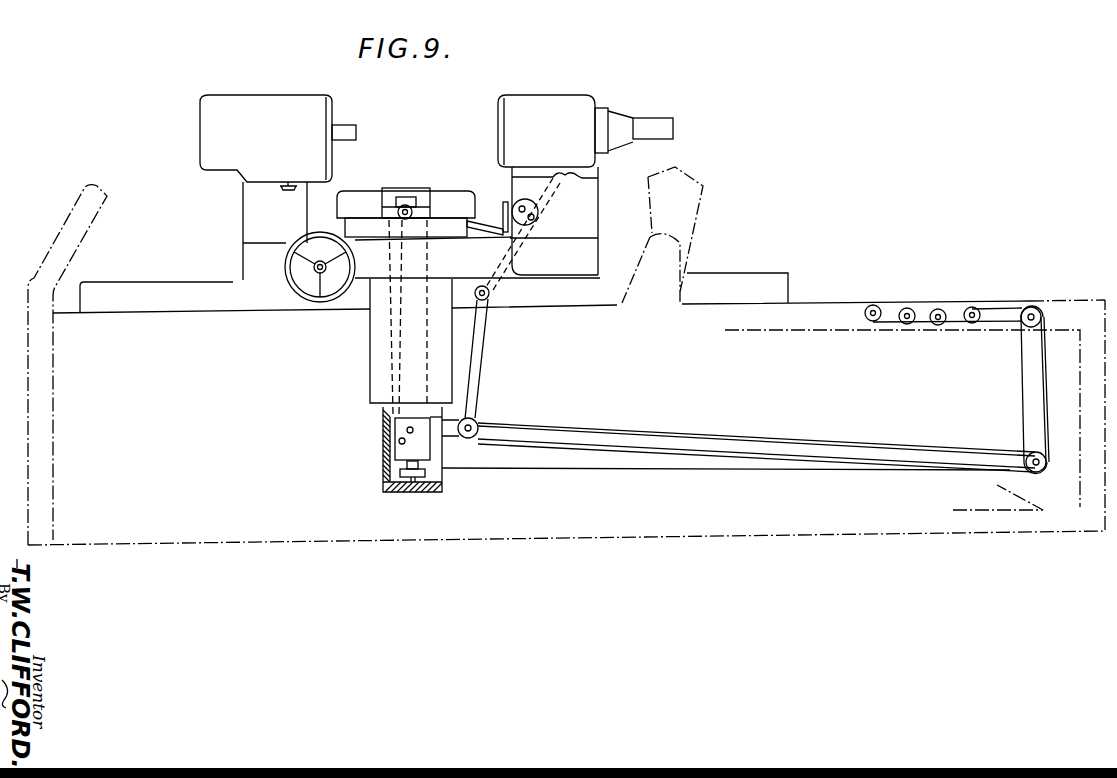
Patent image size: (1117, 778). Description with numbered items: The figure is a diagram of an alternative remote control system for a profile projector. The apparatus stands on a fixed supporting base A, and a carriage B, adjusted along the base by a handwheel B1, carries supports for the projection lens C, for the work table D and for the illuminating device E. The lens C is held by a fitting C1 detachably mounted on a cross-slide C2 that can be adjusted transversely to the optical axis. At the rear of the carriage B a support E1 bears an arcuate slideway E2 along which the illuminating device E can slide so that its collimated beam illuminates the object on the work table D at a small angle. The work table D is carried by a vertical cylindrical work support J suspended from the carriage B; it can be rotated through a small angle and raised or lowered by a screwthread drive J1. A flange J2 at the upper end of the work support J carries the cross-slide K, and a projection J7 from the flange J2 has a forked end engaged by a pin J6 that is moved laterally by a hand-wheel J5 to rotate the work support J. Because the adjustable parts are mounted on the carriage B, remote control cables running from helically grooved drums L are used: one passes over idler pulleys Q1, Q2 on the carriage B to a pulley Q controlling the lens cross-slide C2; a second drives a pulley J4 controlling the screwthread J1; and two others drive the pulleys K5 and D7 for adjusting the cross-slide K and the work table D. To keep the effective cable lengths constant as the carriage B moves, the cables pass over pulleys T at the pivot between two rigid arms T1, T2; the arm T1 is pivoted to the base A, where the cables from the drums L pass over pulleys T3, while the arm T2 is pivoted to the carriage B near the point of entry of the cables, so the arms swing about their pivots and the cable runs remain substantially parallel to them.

The fixed supporting base A is at (45, 388).
The carriage B is at (270, 265).
The handwheel B1 is at (312, 303).
The projection lens C is at (655, 130).
The lens fitting C1 is at (557, 133).
The lens cross-slide C2 is at (583, 178).
The work table D is at (352, 199).
The pulley D7 is at (405, 199).
The illuminating device E is at (238, 142).
The illuminating device support E1 is at (270, 219).
The arcuate slideway E2 is at (288, 181).
The work support J is at (370, 339).
The screwthread drive J1 is at (406, 467).
The flange J2 is at (373, 216).
The pulley J4 is at (388, 480).
The hand-wheel J5 is at (523, 203).
The pin J6 is at (503, 203).
The projection J7 is at (477, 222).
The cross-slide K is at (447, 208).
The pulley K5 is at (407, 174).
The helically grooved drums L is at (968, 308).
The pulley Q is at (566, 185).
The idler pulley Q1 is at (479, 420).
The idler pulley Q2 is at (486, 299).
The pulleys T is at (1040, 472).
The rigid arm T1 is at (1035, 382).
The rigid arm T2 is at (780, 450).
The pulleys T3 is at (1040, 310).